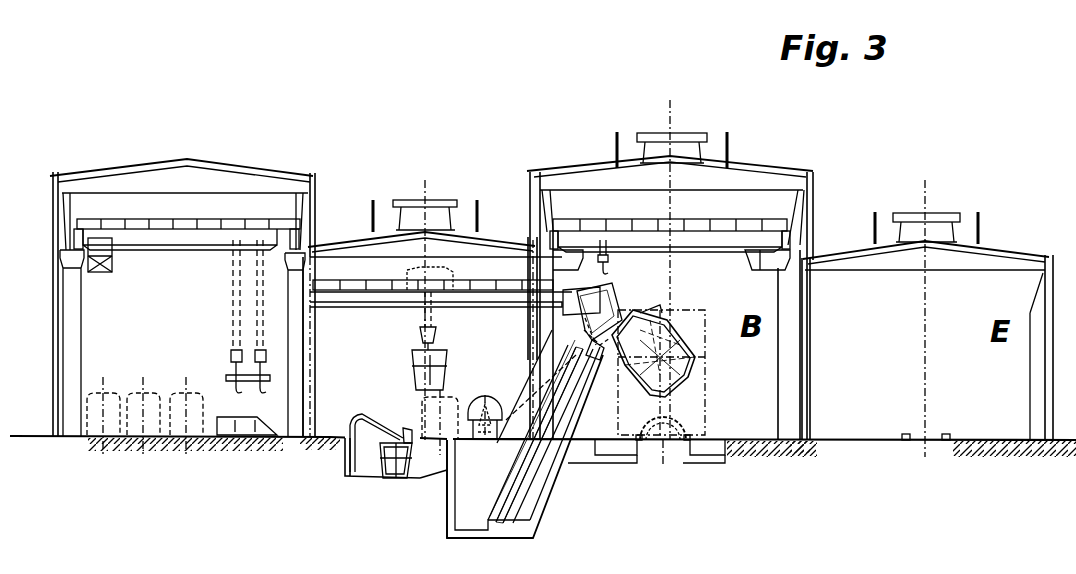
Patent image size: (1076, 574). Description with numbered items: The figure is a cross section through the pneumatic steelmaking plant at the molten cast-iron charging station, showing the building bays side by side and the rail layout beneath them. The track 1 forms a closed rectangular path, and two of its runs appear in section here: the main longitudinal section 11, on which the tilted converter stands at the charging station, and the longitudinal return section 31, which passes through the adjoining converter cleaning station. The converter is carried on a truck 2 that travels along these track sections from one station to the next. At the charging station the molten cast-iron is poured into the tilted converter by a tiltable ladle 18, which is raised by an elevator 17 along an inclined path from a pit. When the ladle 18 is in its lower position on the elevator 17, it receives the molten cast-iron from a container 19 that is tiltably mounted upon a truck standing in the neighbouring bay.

The track 1 is at (677, 332).
The truck 2 is at (700, 433).
The main longitudinal section 11 is at (685, 442).
The elevator 17 is at (553, 440).
The tiltable ladle 18 is at (600, 297).
The container 19 is at (485, 395).
The longitudinal return section 31 is at (908, 443).